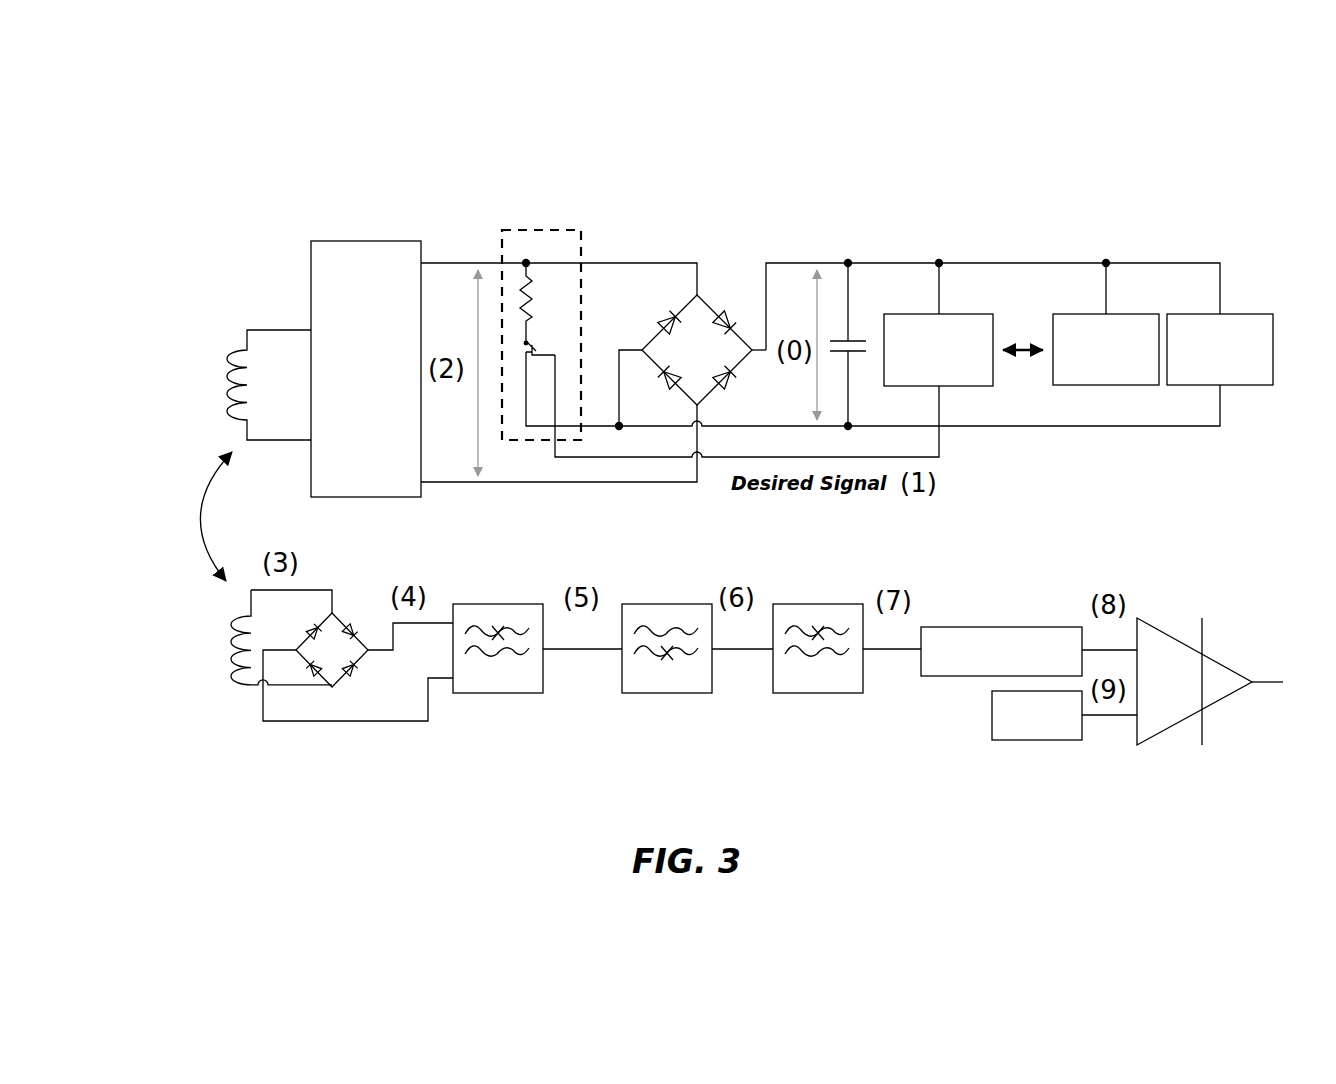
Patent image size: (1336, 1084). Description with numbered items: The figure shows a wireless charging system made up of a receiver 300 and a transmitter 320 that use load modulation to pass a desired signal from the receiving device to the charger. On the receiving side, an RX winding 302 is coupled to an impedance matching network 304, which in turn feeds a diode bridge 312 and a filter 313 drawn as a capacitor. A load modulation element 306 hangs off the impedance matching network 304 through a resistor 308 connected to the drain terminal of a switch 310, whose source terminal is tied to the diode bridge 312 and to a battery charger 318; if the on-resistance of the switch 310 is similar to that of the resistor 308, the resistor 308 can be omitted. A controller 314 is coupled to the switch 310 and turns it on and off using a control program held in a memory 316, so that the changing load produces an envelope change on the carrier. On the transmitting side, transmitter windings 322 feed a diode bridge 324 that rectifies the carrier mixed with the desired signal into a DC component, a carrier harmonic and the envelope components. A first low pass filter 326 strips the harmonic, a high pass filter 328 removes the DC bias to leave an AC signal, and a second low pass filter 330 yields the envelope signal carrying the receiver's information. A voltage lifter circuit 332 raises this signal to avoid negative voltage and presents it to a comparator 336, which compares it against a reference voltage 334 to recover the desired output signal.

The receiver 300 is at (1082, 190).
The RX winding 302 is at (207, 389).
The impedance matching network 304 is at (366, 369).
The load modulation element 306 is at (540, 274).
The resistor 308 is at (540, 301).
The switch 310 is at (541, 345).
The diode bridge 312 is at (713, 290).
The filter 313 is at (858, 332).
The controller 314 is at (959, 310).
The memory 316 is at (1135, 310).
The battery charger 318 is at (1251, 310).
The transmitter 320 is at (360, 826).
The transmitter windings 322 is at (218, 655).
The diode bridge 324 is at (353, 694).
The first low pass filter 326 is at (496, 700).
The high pass filter 328 is at (664, 700).
The second low pass filter 330 is at (820, 700).
The voltage lifter circuit 332 is at (991, 624).
The reference voltage 334 is at (1025, 746).
The comparator 336 is at (1154, 624).